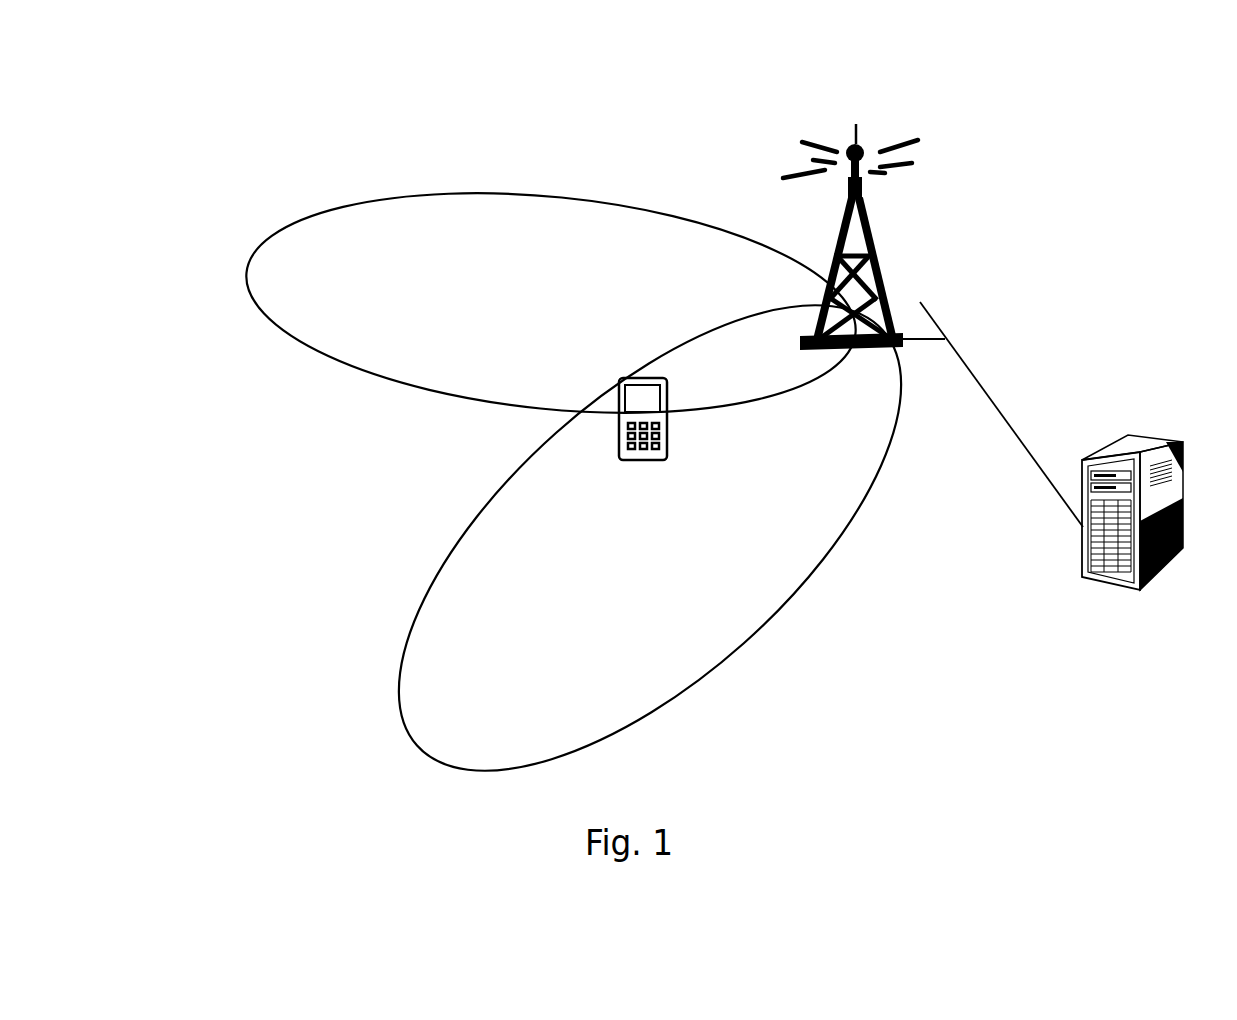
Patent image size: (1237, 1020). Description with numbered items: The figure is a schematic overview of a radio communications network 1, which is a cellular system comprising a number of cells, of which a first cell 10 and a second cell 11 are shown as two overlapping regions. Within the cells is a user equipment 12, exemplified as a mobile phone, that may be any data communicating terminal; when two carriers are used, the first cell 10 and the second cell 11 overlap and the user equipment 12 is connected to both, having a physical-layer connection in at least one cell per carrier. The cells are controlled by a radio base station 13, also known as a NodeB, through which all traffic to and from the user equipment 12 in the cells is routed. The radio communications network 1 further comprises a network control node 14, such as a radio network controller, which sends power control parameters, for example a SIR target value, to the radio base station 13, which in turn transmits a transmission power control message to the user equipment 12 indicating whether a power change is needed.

The radio communications network 1 is at (323, 116).
The first cell 10 is at (582, 600).
The second cell 11 is at (512, 317).
The user equipment 12 is at (647, 398).
The radio base station 13 is at (872, 262).
The network control node 14 is at (1086, 572).